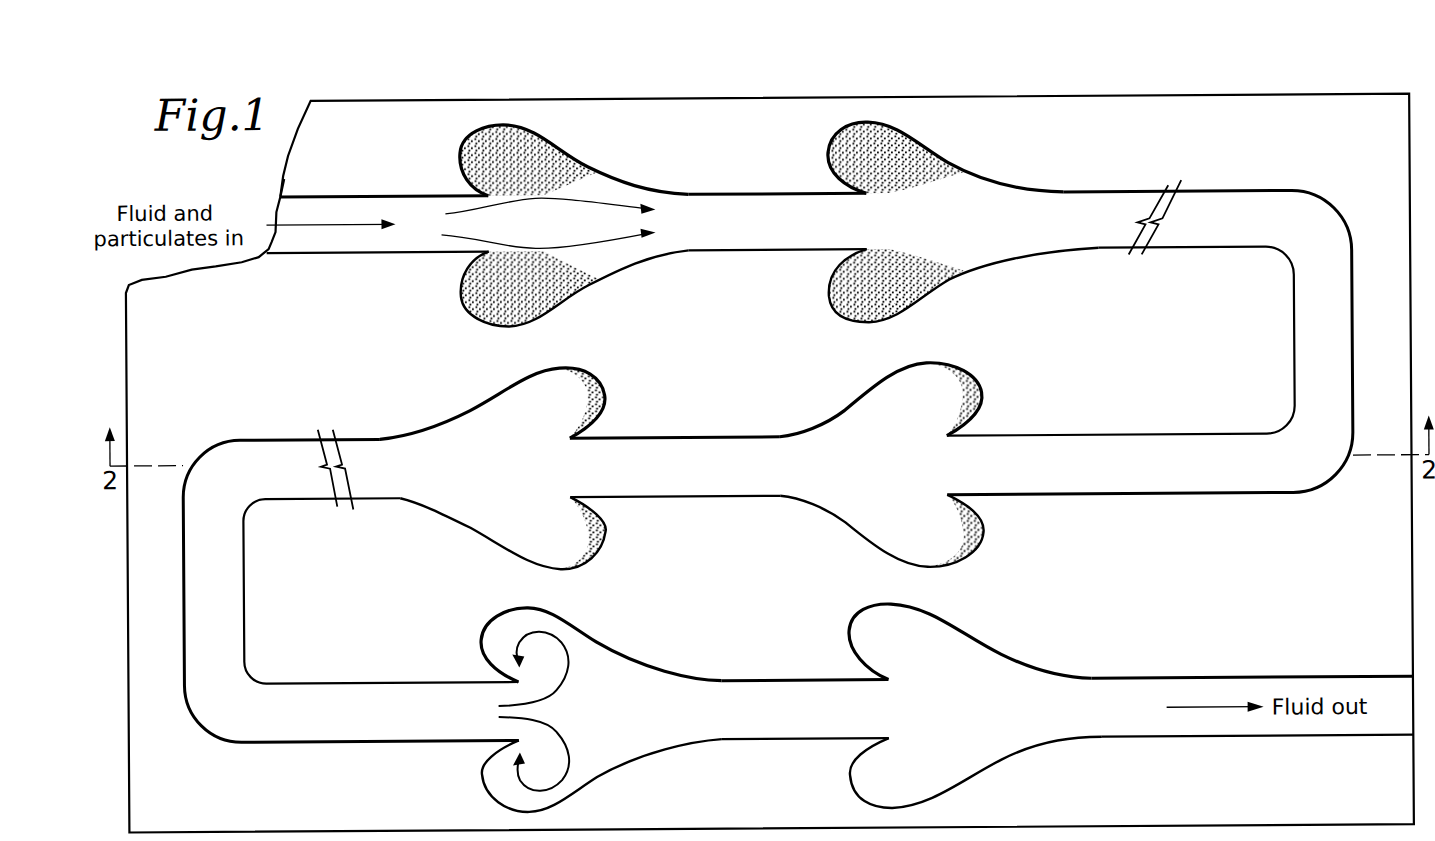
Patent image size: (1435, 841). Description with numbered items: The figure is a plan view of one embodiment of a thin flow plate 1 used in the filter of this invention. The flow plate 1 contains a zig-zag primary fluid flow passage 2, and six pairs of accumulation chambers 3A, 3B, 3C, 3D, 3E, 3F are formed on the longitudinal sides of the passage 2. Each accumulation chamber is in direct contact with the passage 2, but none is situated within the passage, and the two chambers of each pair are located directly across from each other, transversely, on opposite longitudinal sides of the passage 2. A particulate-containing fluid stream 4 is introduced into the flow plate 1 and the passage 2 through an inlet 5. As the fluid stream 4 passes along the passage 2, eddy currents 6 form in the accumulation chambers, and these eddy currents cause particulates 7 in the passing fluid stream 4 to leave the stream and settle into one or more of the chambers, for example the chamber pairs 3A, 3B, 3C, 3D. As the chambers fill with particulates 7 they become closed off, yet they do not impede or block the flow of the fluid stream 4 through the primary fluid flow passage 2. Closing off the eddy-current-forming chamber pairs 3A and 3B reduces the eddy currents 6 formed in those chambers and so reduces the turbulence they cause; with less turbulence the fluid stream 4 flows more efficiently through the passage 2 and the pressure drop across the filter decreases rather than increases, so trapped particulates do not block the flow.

The flow plate 1 is at (282, 159).
The primary fluid flow passage 2 is at (746, 198).
The accumulation chamber pair 3A is at (484, 129).
The accumulation chamber pair 3B is at (910, 136).
The accumulation chamber pair 3C is at (513, 388).
The accumulation chamber pair 3D is at (980, 395).
The accumulation chamber pair 3E is at (490, 623).
The accumulation chamber pair 3F is at (859, 617).
The fluid stream 4 is at (347, 224).
The inlet 5 is at (295, 197).
The eddy currents 6 is at (554, 643).
The particulates 7 is at (548, 157).